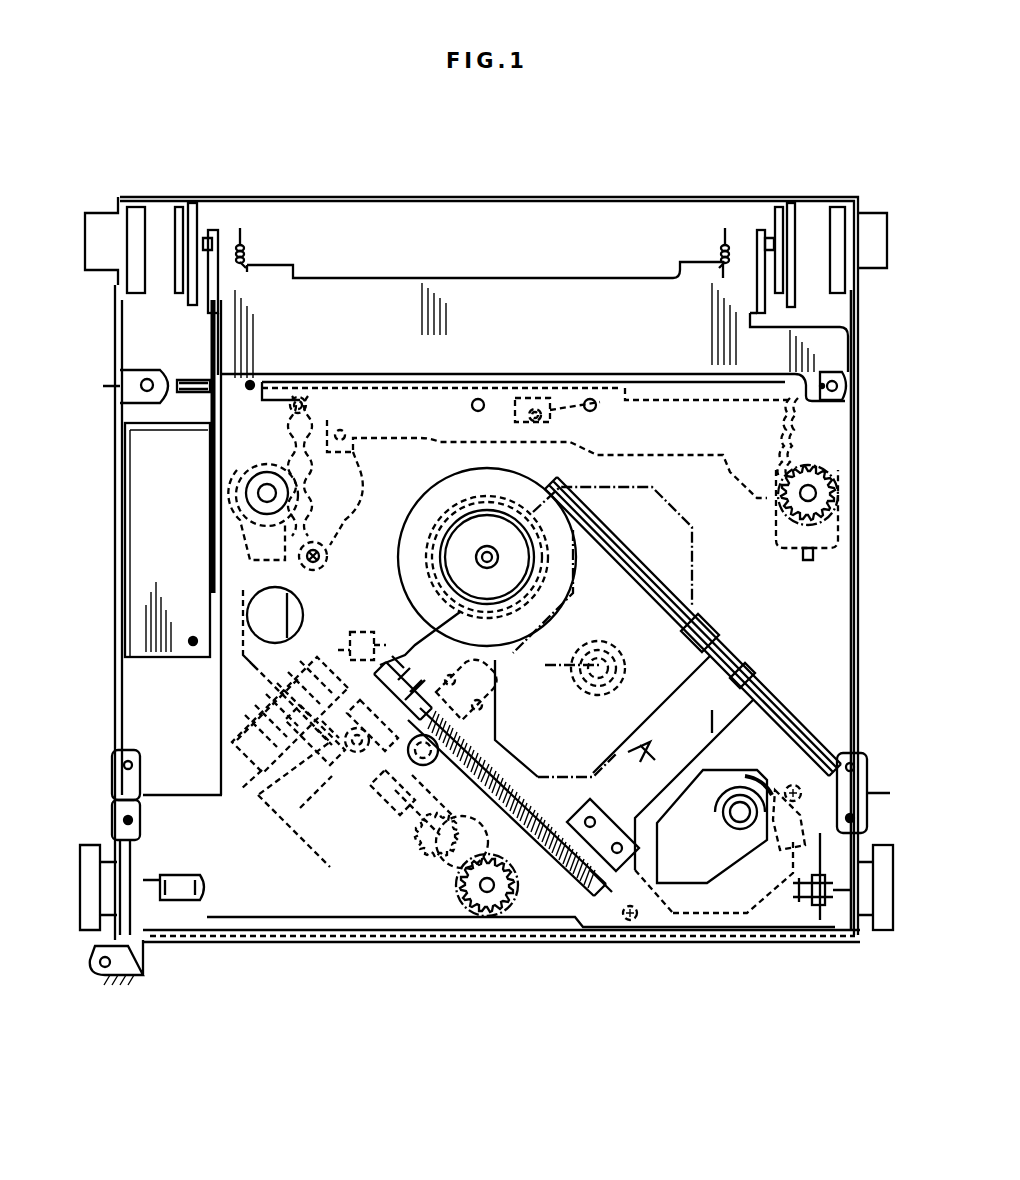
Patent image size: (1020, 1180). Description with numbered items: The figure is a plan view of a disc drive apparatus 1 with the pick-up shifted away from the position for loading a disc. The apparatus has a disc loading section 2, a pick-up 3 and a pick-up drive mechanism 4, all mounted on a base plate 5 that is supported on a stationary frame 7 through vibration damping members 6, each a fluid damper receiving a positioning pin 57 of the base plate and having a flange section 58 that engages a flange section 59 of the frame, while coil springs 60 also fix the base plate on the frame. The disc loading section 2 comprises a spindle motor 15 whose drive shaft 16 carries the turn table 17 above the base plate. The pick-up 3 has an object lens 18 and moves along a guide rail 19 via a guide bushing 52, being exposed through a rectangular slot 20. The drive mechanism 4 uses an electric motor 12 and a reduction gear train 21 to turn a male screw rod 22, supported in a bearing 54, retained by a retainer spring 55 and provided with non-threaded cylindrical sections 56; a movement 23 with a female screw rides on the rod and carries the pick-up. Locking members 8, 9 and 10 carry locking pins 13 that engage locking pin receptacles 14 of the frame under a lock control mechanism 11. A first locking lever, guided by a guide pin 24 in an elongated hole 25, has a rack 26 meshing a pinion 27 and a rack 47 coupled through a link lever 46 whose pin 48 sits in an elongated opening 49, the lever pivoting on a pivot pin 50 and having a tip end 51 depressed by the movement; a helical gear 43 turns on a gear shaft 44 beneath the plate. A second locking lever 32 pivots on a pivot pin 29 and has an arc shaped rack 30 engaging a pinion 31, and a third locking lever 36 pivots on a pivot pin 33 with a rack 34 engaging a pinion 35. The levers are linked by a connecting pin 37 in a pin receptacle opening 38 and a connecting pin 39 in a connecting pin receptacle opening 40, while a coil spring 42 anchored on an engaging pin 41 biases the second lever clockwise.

The disc drive apparatus 1 is at (103, 330).
The disc loading section 2 is at (404, 500).
The pick-up 3 is at (615, 760).
The pick-up drive mechanism 4 is at (322, 858).
The base plate 5 is at (346, 906).
The vibration damping member 6 is at (157, 235).
The stationary frame 7 is at (212, 944).
The locking member 8 is at (506, 905).
The locking member 9 is at (238, 522).
The locking member 10 is at (838, 522).
The lock control mechanism 11 is at (262, 668).
The electric motor 12 is at (302, 820).
The locking pin 13 is at (305, 553).
The locking pin receptacle 14 is at (212, 492).
The spindle motor 15 is at (440, 535).
The drive shaft 16 is at (478, 557).
The turn table 17 is at (446, 576).
The object lens 18 is at (740, 815).
The guide rail 19 is at (688, 640).
The rectangular slot 20 is at (696, 620).
The reduction gear train 21 is at (272, 696).
The male screw rod 22 is at (532, 803).
The movement 23 is at (603, 885).
The guide pin 24 is at (575, 700).
The elongated hole 25 is at (560, 790).
The rack 26 is at (470, 822).
The pinion 27 is at (470, 860).
The pivot pin 29 is at (477, 398).
The arc shaped rack 30 is at (295, 438).
The pinion 31 is at (246, 475).
The second locking lever 32 is at (375, 385).
The pivot pin 33 is at (591, 398).
The rack 34 is at (805, 432).
The pinion 35 is at (818, 478).
The third locking lever 36 is at (660, 395).
The connecting pin 37 is at (305, 565).
The pin receptacle opening 38 is at (305, 556).
The connecting pin 39 is at (532, 408).
The connecting pin receptacle opening 40 is at (548, 400).
The engaging pin 41 is at (294, 398).
The coil spring 42 is at (305, 420).
The helical gear 43 is at (420, 810).
The gear shaft 44 is at (395, 800).
The link lever 46 is at (355, 752).
The rack 47 is at (415, 765).
The pin 48 is at (325, 755).
The elongated opening 49 is at (320, 740).
The pivot pin 50 is at (378, 765).
The tip end 51 is at (428, 675).
The guide bushing 52 is at (716, 660).
The bearing 54 is at (289, 615).
The retainer spring 55 is at (358, 632).
The non-threaded cylindrical section 56 is at (490, 690).
The positioning pin 57 is at (215, 240).
The flange section 58 is at (179, 240).
The flange section 59 is at (193, 245).
The coil spring 60 is at (246, 250).